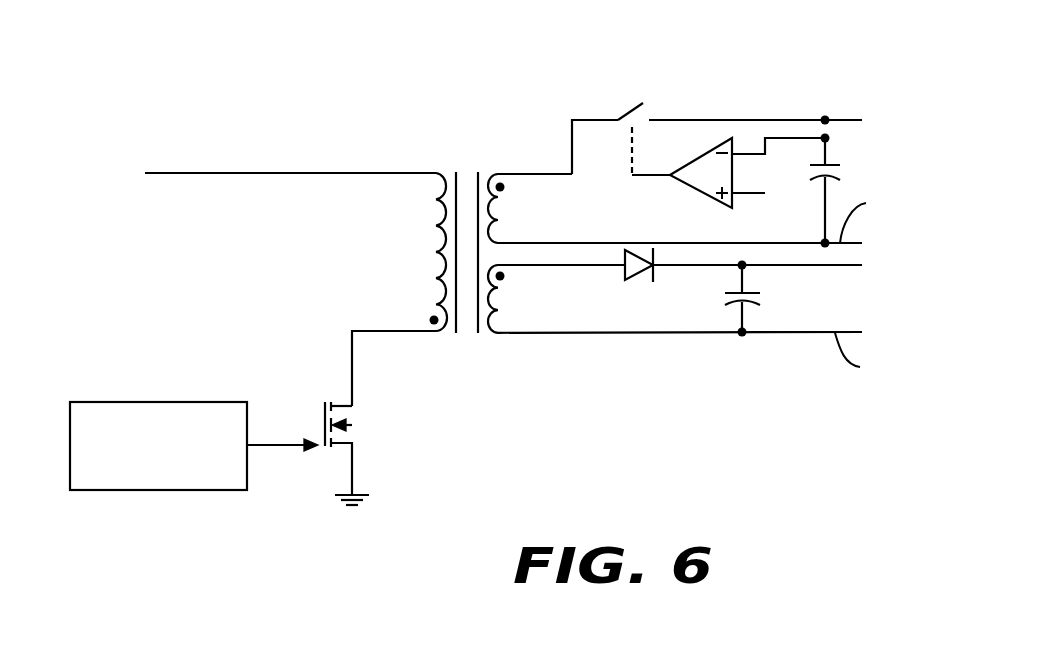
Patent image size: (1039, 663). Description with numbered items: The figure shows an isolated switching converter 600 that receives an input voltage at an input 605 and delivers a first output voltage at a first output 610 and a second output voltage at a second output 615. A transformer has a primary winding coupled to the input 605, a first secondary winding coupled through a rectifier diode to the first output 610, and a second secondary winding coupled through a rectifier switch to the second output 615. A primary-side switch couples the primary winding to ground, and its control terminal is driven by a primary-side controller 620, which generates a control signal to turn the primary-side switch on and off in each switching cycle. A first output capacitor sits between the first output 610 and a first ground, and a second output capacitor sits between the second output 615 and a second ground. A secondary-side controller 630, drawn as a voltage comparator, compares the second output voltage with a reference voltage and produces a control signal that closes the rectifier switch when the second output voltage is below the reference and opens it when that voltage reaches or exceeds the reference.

The isolated switching converter 600 is at (224, 531).
The input 605 is at (145, 173).
The first output 610 is at (827, 264).
The second output 615 is at (857, 120).
The primary-side controller 620 is at (147, 402).
The secondary-side controller 630 is at (734, 138).